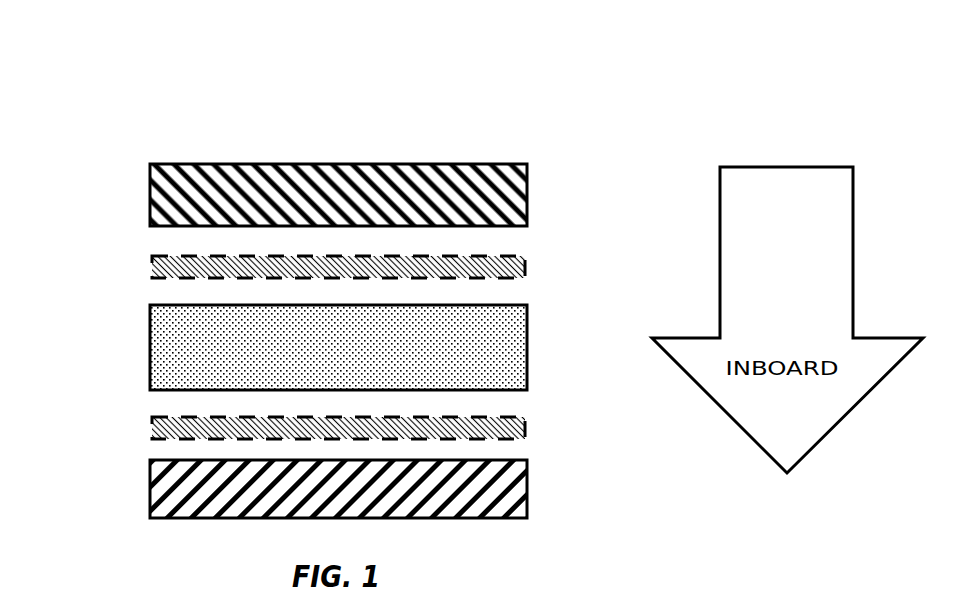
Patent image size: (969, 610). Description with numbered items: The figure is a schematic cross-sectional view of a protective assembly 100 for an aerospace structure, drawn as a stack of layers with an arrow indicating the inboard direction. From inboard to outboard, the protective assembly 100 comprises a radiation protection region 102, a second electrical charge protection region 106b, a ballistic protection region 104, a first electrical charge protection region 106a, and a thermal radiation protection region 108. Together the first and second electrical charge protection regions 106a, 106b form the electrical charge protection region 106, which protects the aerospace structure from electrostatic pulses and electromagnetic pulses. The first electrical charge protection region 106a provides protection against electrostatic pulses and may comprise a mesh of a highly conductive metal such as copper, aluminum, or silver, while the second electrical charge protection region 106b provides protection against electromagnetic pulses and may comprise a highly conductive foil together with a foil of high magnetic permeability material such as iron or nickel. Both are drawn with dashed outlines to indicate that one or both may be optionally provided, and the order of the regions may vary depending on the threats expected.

The protective assembly 100 is at (98, 157).
The radiation protection region 102 is at (527, 494).
The ballistic protection region 104 is at (527, 346).
The electrical charge protection region 106 is at (352, 333).
The first electrical charge protection region 106a is at (526, 268).
The second electrical charge protection region 106b is at (526, 428).
The thermal radiation protection region 108 is at (527, 197).